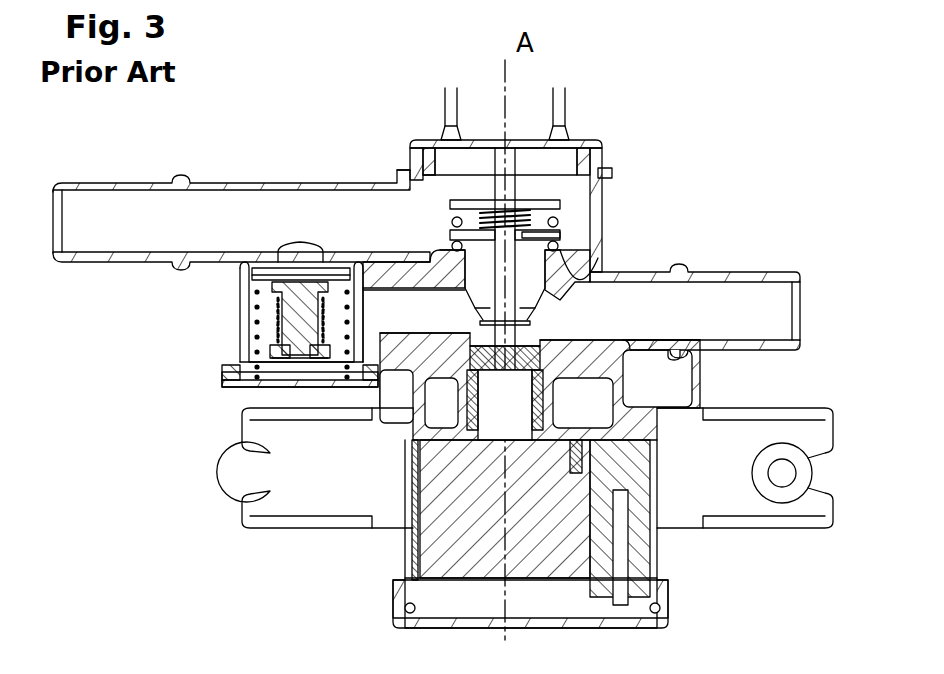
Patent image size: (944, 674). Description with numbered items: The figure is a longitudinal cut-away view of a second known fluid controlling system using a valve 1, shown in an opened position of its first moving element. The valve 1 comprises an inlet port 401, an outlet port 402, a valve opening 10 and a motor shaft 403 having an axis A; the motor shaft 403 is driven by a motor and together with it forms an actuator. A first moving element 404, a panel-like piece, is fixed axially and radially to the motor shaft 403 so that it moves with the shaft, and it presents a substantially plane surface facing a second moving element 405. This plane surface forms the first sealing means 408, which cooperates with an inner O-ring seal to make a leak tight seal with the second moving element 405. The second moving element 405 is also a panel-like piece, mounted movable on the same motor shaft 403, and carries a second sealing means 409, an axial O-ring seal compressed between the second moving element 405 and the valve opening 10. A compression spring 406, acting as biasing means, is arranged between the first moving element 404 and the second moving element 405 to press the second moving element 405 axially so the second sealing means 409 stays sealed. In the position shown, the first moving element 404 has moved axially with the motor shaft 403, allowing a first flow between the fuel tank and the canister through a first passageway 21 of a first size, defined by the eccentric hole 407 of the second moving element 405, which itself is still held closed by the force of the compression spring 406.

The valve 1 is at (735, 156).
The valve opening 10 is at (535, 258).
The first passageway 21 is at (560, 222).
The inlet port 401 is at (109, 230).
The outlet port 402 is at (773, 312).
The motor shaft 403 is at (437, 395).
The first moving element 404 is at (443, 196).
The second moving element 405 is at (450, 222).
The compression spring 406 is at (532, 200).
The eccentric hole 407 is at (578, 296).
The first sealing means 408 is at (434, 231).
The second sealing means 409 is at (445, 238).